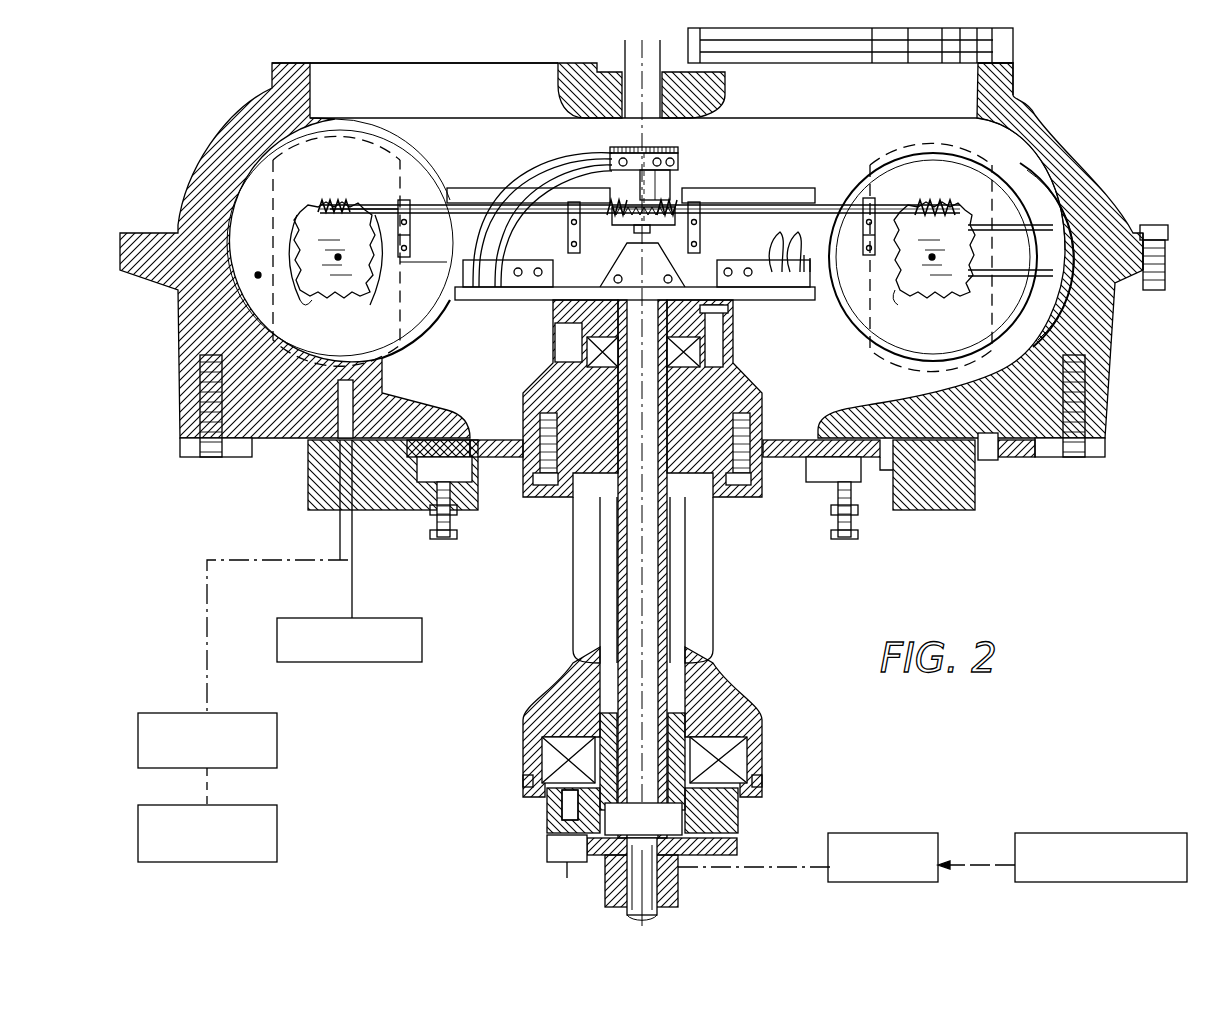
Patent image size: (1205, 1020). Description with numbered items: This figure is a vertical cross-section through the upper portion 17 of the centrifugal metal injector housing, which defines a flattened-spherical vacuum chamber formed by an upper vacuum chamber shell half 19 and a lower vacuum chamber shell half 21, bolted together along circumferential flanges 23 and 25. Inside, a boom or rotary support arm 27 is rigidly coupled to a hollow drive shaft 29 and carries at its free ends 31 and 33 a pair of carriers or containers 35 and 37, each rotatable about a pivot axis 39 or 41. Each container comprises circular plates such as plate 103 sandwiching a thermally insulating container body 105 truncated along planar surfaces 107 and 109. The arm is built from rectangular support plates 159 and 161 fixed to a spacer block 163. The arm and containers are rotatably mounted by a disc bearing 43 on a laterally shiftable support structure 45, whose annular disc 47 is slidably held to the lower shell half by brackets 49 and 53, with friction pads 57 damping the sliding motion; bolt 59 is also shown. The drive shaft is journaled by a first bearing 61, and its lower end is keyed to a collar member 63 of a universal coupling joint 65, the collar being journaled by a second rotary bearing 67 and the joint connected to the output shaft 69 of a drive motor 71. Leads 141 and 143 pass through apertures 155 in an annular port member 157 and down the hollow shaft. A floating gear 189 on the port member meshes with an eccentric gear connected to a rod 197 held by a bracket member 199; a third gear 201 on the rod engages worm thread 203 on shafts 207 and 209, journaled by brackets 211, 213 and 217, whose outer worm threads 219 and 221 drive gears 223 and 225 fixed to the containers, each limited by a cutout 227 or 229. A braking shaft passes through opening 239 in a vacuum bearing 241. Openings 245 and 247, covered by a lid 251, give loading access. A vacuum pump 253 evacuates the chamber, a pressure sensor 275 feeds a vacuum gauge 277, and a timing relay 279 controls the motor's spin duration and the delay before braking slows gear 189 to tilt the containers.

The upper portion 17 is at (176, 137).
The upper vacuum chamber shell half 19 is at (1060, 170).
The lower vacuum chamber shell half 21 is at (1100, 375).
The circumferential flange 23 is at (1135, 245).
The circumferential flange 25 is at (1143, 290).
The boom or rotary support arm 27 is at (447, 300).
The hollow drive shaft 29 is at (618, 565).
The free end 31 is at (305, 302).
The free end 33 is at (965, 290).
The carrier or container 35 is at (420, 330).
The carrier or container 37 is at (833, 309).
The pivot axis 39 is at (345, 300).
The pivot axis 41 is at (920, 278).
The disc bearing 43 is at (752, 305).
The support structure 45 is at (566, 496).
The annular disc 47 is at (790, 448).
The bracket 49 is at (405, 510).
The bracket 53 is at (965, 510).
The friction pad 57 is at (812, 493).
The bolt 59 is at (873, 505).
The first bearing 61 is at (585, 345).
The collar member 63 is at (730, 797).
The universal coupling joint 65 is at (518, 820).
The second rotary bearing 67 is at (755, 762).
The output shaft 69 is at (660, 878).
The drive motor 71 is at (895, 833).
The circular plate 103 is at (408, 198).
The container body 105 is at (348, 167).
The planar surface 107 is at (256, 273).
The planar surface 109 is at (428, 260).
The lead 141 is at (510, 190).
The lead 143 is at (560, 188).
The aperture 155 is at (612, 150).
The annular port member 157 is at (680, 160).
The support plate 159 is at (838, 222).
The support plate 161 is at (738, 196).
The spacer block 163 is at (450, 186).
The gear 189 is at (700, 165).
The rod 197 is at (670, 185).
The bracket member 199 is at (620, 265).
The third gear 201 is at (670, 236).
The worm thread 203 is at (612, 215).
The shaft 207 is at (540, 215).
The shaft 209 is at (830, 205).
The journaling bracket 211 is at (388, 185).
The journaling bracket 213 is at (552, 297).
The journaling bracket 217 is at (866, 205).
The worm thread 219 is at (330, 200).
The worm thread 221 is at (940, 203).
The gear 223 is at (300, 230).
The gear 225 is at (955, 255).
The indent or cutout 227 is at (368, 305).
The indent or cutout 229 is at (900, 255).
The opening 239 is at (683, 88).
The vacuum bearing 241 is at (608, 73).
The opening 245 is at (437, 88).
The opening 247 is at (968, 120).
The vacuum-tight lid 251 is at (1015, 40).
The vacuum pump 253 is at (295, 618).
The pressure sensor 275 is at (277, 745).
The vacuum gauge 277 is at (277, 830).
The timing relay 279 is at (1078, 836).